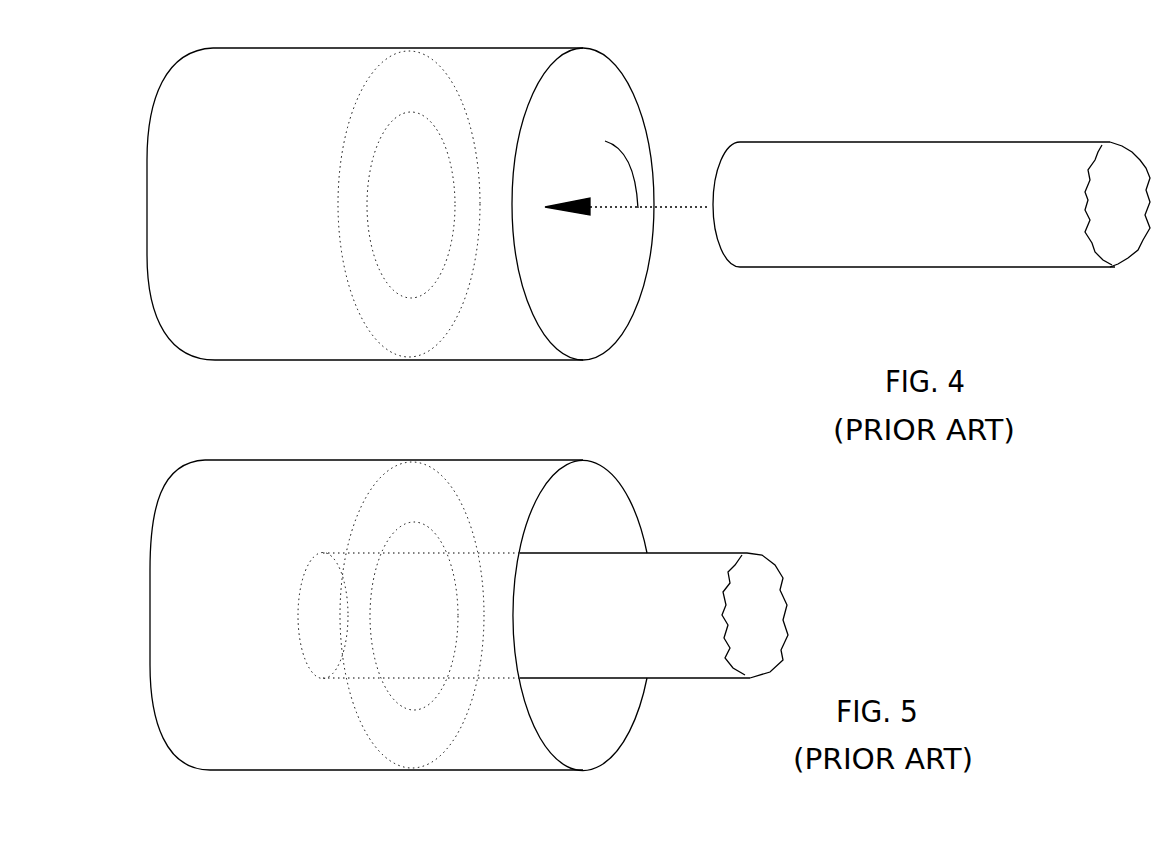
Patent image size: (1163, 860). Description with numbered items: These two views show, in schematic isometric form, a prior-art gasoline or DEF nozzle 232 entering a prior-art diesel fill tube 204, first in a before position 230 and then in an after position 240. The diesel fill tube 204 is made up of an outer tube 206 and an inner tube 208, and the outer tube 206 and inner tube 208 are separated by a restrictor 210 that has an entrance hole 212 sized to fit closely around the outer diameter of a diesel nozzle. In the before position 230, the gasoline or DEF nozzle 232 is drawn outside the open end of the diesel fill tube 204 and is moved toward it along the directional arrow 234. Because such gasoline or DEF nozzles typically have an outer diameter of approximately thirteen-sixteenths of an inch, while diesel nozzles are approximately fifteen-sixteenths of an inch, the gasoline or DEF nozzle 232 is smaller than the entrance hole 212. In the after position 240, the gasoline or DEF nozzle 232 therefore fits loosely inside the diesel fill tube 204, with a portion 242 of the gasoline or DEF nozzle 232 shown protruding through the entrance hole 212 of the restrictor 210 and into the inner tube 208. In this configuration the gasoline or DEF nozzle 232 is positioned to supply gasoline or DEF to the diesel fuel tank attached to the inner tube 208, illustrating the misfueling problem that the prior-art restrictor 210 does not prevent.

In FIG. 4, the diesel fill tube 204 is at (617, 293).
In FIG. 5, the diesel fill tube 204 is at (606, 727).
In FIG. 4, the outer tube 206 is at (496, 350).
In FIG. 5, the outer tube 206 is at (527, 468).
In FIG. 4, the inner tube 208 is at (216, 347).
In FIG. 5, the inner tube 208 is at (342, 478).
In FIG. 4, the restrictor 210 is at (375, 295).
In FIG. 5, the restrictor 210 is at (383, 718).
In FIG. 4, the entrance hole 212 is at (410, 170).
In FIG. 5, the entrance hole 212 is at (418, 540).
In FIG. 4, the before position 230 is at (812, 108).
In FIG. 4, the gasoline or DEF nozzle 232 is at (1044, 150).
In FIG. 5, the gasoline or DEF nozzle 232 is at (717, 565).
In FIG. 4, the directional arrow 234 is at (626, 169).
In FIG. 5, the after position 240 is at (850, 557).
In FIG. 5, the portion of gasoline or DEF nozzle 242 is at (330, 660).